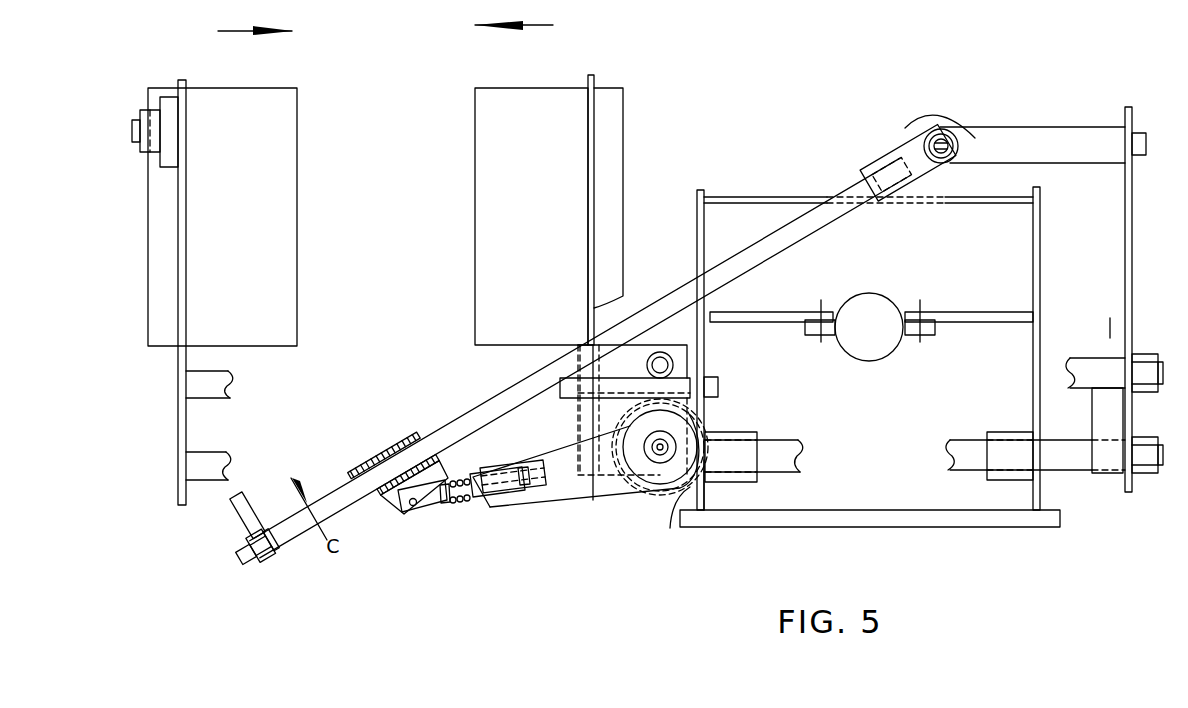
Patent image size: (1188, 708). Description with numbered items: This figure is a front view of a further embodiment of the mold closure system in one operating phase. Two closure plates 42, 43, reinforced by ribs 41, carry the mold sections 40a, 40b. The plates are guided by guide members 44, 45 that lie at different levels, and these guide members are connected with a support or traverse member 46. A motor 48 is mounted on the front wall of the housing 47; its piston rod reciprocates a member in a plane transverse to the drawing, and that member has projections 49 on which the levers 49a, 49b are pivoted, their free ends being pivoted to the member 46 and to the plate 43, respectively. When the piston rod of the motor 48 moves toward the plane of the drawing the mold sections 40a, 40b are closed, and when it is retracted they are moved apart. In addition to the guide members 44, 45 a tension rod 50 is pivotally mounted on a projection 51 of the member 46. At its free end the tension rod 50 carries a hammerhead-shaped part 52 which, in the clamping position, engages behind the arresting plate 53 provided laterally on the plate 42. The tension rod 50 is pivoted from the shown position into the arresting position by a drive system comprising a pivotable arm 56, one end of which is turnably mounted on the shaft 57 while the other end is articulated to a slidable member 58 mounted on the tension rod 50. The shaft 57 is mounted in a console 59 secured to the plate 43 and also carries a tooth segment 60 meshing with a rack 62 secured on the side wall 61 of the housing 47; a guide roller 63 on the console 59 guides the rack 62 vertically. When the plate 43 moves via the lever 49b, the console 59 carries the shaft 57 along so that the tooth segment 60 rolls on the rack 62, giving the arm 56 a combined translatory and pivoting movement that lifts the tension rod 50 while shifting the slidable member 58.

The mold section 40a is at (231, 282).
The mold section 40b is at (524, 282).
The ribs 41 is at (616, 128).
The closure plate 42 is at (188, 118).
The closure plate 43 is at (586, 108).
The guide member 44 is at (218, 397).
The guide member 45 is at (215, 458).
The support or traverse member 46 is at (1134, 276).
The housing 47 is at (757, 197).
The motor 48 is at (886, 351).
The projections 49 is at (928, 337).
The lever 49a is at (788, 312).
The lever 49b is at (993, 312).
The tension rod 50 is at (450, 420).
The projection 51 is at (935, 126).
The hammerhead-shaped part 52 is at (242, 513).
The arresting plate 53 is at (168, 100).
The pivotable arm 56 is at (553, 502).
The shaft 57 is at (658, 456).
The slidable member 58 is at (382, 460).
The console 59 is at (688, 360).
The tooth segment 60 is at (617, 413).
The side wall 61 is at (677, 500).
The rack 62 is at (627, 386).
The guide roller 63 is at (661, 365).